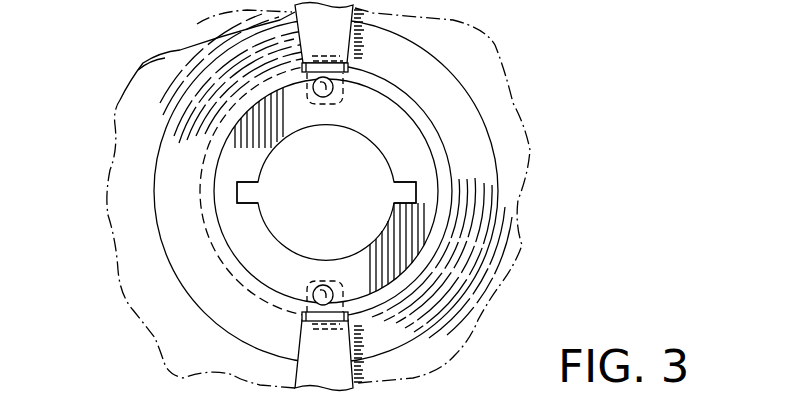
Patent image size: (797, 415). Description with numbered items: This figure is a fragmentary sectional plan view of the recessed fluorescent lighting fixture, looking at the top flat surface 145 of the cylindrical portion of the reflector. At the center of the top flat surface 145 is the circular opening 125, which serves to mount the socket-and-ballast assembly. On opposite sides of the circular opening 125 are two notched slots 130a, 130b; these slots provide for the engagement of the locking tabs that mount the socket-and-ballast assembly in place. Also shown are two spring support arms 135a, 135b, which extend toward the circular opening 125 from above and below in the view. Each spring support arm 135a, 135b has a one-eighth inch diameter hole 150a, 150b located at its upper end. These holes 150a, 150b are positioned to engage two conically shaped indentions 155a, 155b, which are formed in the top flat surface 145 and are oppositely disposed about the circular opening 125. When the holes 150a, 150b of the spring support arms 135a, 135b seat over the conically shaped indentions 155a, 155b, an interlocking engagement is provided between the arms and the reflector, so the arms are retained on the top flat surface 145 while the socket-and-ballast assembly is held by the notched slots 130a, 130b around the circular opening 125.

The circular opening 125 is at (369, 158).
The notched slot 130a is at (416, 190).
The notched slot 130b is at (237, 190).
The spring support arm 135a is at (318, 33).
The spring support arm 135b is at (310, 370).
The top flat surface 145 is at (390, 125).
The one-eighth inch diameter hole 150a is at (333, 87).
The one-eighth inch diameter hole 150b is at (313, 293).
The conically shaped indention 155a is at (323, 97).
The conically shaped indention 155b is at (323, 285).